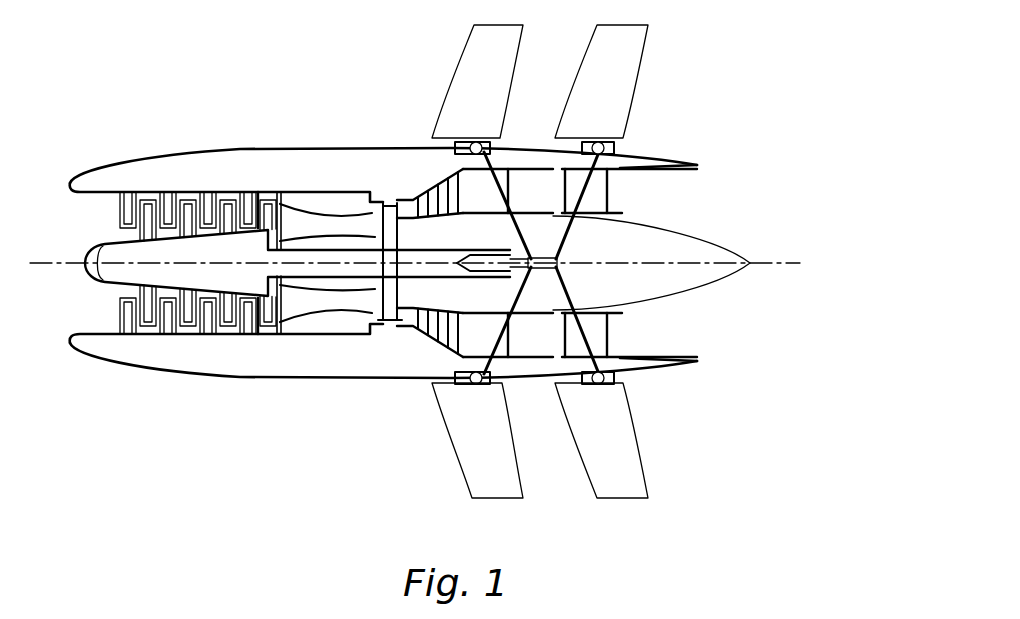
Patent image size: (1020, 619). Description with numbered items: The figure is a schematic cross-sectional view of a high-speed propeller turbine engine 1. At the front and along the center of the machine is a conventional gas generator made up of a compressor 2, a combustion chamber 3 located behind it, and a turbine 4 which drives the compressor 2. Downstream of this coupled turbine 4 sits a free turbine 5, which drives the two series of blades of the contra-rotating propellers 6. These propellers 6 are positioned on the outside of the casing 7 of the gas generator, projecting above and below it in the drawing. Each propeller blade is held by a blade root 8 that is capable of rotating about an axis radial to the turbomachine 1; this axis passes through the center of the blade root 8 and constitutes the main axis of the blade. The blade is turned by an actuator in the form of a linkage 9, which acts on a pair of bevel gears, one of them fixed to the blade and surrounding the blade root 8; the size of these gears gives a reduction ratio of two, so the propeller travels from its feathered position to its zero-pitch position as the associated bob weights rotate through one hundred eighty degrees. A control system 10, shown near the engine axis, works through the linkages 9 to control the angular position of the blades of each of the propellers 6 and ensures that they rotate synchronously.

The high-speed propeller turbine engine 1 is at (415, 261).
The compressor 2 is at (153, 200).
The combustion chamber 3 is at (312, 217).
The turbine 4 is at (389, 322).
The free turbine 5 is at (430, 318).
The contra-rotating propellers 6 is at (600, 52).
The casing 7 is at (230, 163).
The blade root 8 is at (461, 138).
The linkage 9 is at (508, 150).
The control system 10 is at (553, 262).